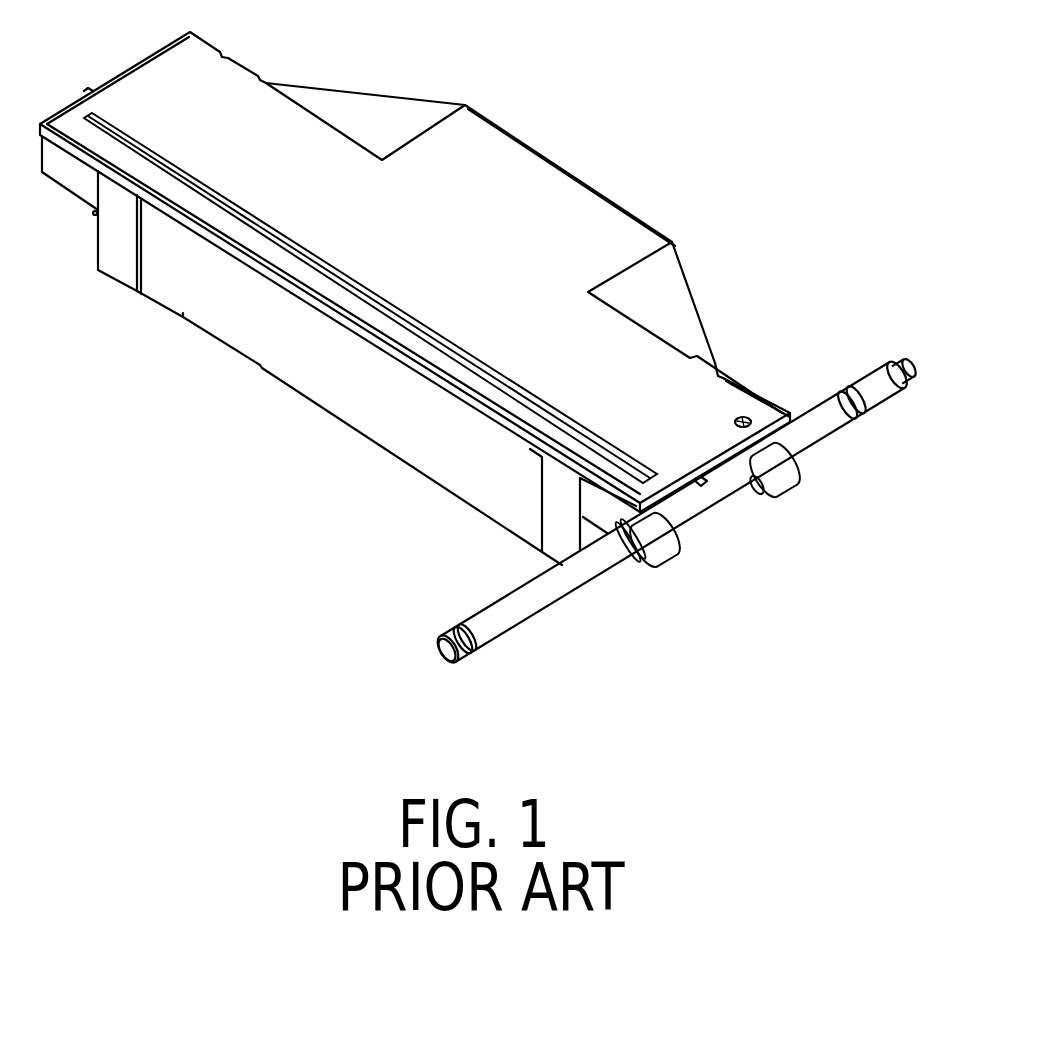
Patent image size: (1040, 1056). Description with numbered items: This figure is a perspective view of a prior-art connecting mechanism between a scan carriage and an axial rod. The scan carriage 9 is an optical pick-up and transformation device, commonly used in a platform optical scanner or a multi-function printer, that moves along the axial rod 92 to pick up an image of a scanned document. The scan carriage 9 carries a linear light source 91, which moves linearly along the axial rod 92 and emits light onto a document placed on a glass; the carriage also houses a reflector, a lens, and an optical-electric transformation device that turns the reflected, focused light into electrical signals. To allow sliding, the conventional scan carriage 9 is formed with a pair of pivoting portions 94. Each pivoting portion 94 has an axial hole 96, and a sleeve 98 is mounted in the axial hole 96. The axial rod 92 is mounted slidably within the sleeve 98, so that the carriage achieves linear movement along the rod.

The scan carriage 9 is at (570, 203).
The linear light source 91 is at (420, 333).
The axial rod 92 is at (877, 397).
The pivoting portions 94 is at (788, 475).
The axial hole 96 is at (752, 490).
The sleeve 98 is at (637, 567).